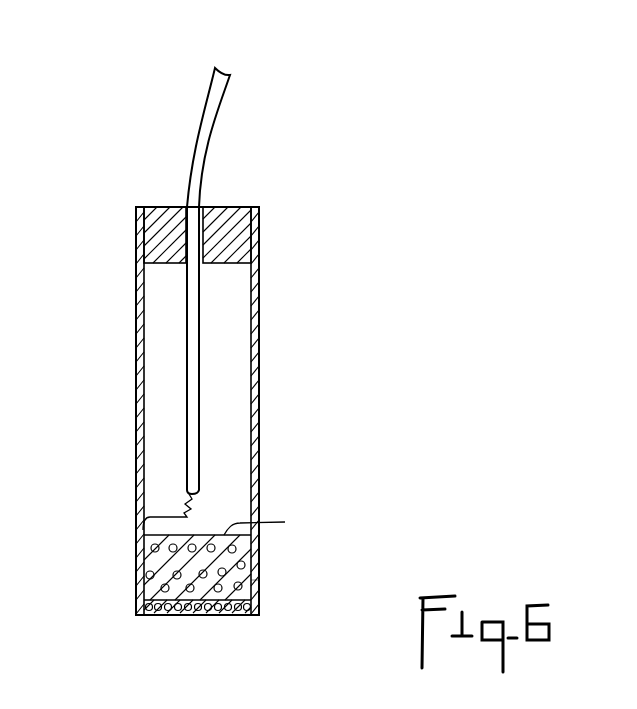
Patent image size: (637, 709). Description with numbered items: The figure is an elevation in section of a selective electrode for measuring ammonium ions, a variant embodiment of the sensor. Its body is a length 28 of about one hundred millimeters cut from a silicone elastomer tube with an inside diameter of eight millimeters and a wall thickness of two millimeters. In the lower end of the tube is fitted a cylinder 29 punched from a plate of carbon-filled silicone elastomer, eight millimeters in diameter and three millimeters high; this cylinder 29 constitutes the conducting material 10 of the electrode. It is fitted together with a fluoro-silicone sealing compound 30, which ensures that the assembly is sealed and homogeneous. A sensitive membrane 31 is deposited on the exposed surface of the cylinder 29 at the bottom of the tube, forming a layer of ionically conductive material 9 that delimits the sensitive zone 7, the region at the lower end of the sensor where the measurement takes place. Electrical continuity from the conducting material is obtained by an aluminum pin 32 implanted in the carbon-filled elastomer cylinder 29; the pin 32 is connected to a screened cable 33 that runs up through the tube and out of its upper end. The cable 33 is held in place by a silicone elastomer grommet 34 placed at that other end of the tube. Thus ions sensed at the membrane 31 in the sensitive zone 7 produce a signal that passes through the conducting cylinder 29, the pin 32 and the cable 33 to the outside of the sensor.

The length of tube 28 is at (257, 307).
The silicone elastomer grommet 34 is at (227, 213).
The screened cable 33 is at (195, 393).
The aluminum pin 32 is at (189, 496).
The conducting material 10 is at (218, 567).
The ionically conductive material 9 is at (133, 603).
The cylinder 29 is at (272, 532).
The fluoro-silicone sealing compound 30 is at (259, 585).
The sensitive membrane 31 is at (233, 616).
The bottom end 7 is at (158, 616).